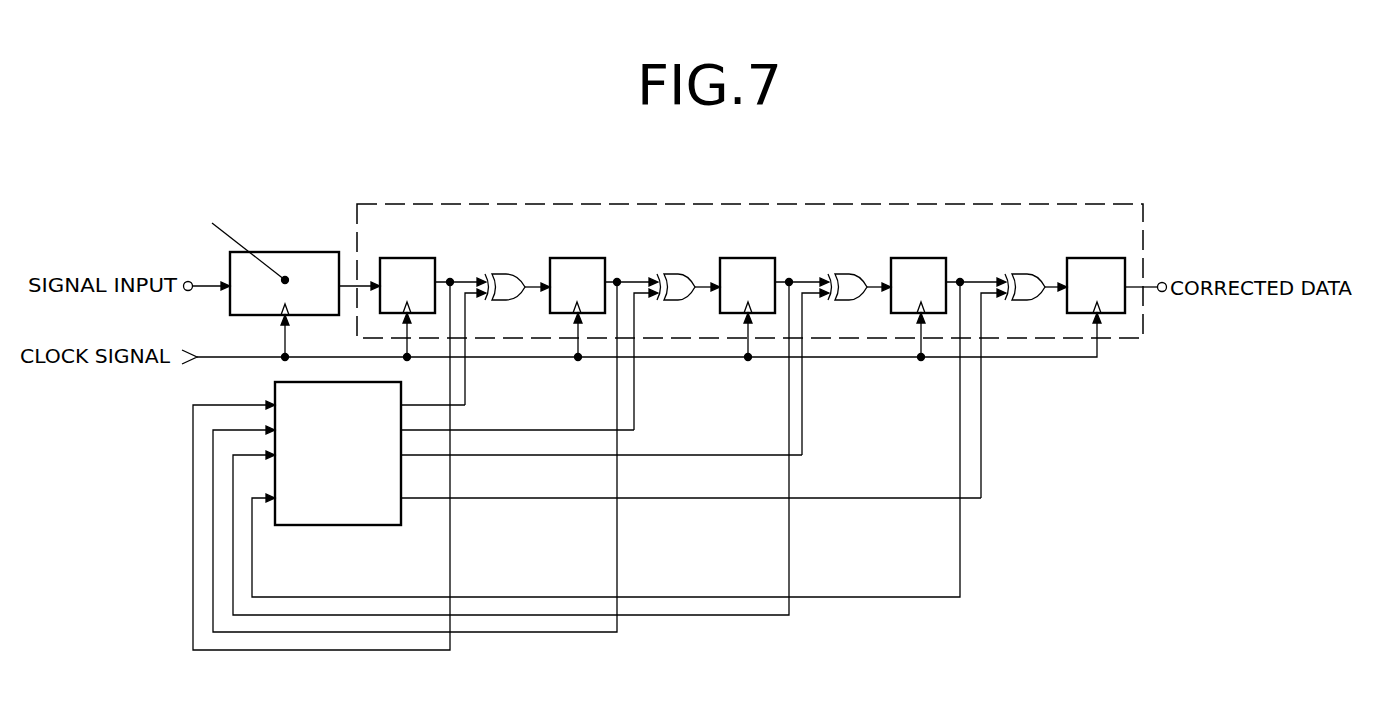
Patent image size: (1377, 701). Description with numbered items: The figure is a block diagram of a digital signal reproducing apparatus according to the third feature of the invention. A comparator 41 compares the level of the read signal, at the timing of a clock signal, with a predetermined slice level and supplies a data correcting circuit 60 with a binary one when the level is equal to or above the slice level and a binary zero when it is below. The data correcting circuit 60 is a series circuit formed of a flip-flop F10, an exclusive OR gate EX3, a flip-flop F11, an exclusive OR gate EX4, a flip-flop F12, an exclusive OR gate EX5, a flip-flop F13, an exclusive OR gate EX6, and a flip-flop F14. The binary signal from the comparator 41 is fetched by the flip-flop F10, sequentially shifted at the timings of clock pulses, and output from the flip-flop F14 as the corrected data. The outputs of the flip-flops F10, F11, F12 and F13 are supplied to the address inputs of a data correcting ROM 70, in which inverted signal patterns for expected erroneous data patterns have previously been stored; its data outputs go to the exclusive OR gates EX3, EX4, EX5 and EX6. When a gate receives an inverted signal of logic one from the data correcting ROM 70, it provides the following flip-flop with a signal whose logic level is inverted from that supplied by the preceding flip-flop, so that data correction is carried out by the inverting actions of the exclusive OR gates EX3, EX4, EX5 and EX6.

The comparator 41 is at (319, 252).
The data correcting circuit 60 is at (1063, 204).
The data correcting ROM 70 is at (310, 527).
The flip-flop F10 is at (415, 258).
The flip-flop F11 is at (585, 258).
The flip-flop F12 is at (753, 258).
The flip-flop F13 is at (928, 258).
The flip-flop F14 is at (1097, 258).
The exclusive OR gate EX3 is at (507, 273).
The exclusive OR gate EX4 is at (678, 273).
The exclusive OR gate EX5 is at (847, 273).
The exclusive OR gate EX6 is at (1024, 273).